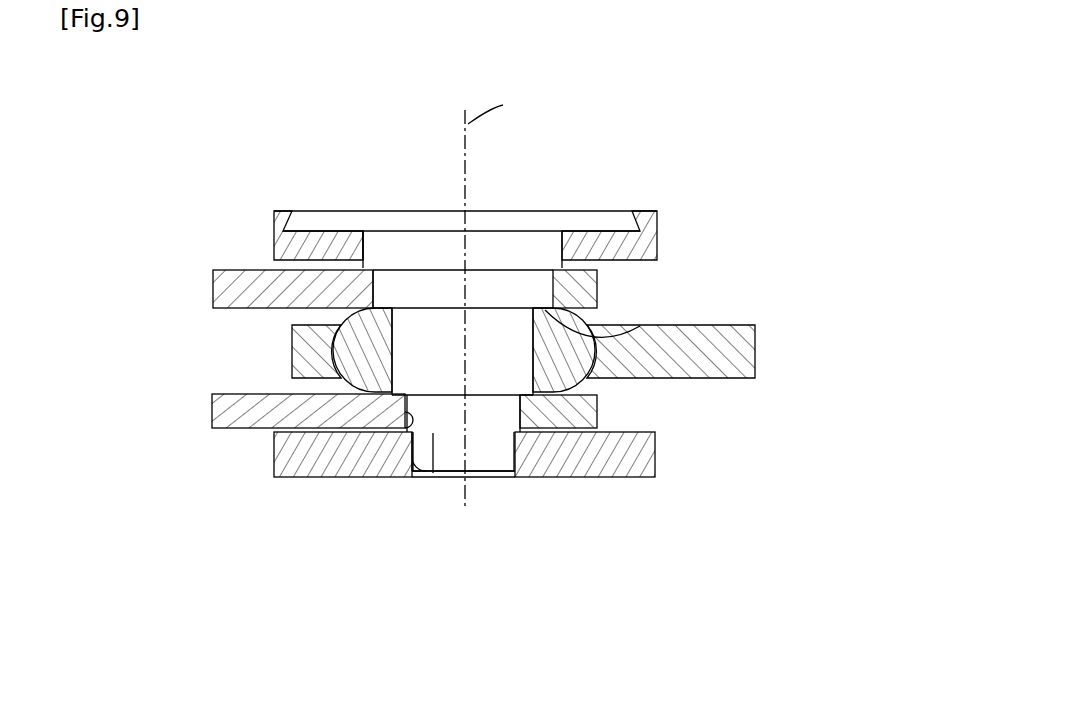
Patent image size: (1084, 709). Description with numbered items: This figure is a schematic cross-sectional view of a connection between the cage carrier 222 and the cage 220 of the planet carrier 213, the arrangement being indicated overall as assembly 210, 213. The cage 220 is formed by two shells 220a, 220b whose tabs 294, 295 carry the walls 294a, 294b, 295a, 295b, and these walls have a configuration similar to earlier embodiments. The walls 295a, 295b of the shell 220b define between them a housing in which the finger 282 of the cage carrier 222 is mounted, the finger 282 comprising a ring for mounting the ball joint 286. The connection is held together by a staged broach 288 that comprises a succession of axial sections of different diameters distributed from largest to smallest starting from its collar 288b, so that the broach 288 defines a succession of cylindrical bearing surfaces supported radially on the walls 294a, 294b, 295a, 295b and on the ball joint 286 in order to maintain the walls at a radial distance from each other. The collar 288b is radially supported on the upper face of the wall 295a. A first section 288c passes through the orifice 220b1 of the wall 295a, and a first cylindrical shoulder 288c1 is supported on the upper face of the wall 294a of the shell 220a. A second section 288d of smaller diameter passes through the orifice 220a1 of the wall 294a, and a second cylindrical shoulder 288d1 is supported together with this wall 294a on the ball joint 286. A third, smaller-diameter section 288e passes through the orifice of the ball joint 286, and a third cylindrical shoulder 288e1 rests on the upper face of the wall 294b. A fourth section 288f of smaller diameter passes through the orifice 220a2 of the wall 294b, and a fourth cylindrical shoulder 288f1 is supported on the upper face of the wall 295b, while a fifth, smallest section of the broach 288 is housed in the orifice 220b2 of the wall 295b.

The camera module 210 is at (502, 384).
The planet carrier 213 is at (803, 152).
The cage 220 is at (290, 484).
The shell 220a is at (212, 272).
The orifice 220a1 is at (374, 287).
The orifice 220a2 is at (407, 432).
The shell 220b is at (664, 213).
The orifice 220b1 is at (363, 258).
The orifice 220b2 is at (424, 474).
The cage carrier 222 is at (586, 348).
The finger 282 is at (755, 348).
The ball joint 286 is at (571, 368).
The broach 288 is at (607, 196).
The collar 288b is at (540, 223).
The first section 288c is at (488, 240).
The first cylindrical shoulder 288c1 is at (598, 293).
The second section 288d is at (508, 297).
The second cylindrical shoulder 288d1 is at (640, 326).
The third section 288e is at (487, 367).
The third cylindrical shoulder 288e1 is at (598, 413).
The fourth section 288f is at (475, 420).
The fourth cylindrical shoulder 288f1 is at (435, 475).
The tabs 294 is at (256, 361).
The wall 294a is at (214, 294).
The wall 294b is at (212, 412).
The tabs 295 is at (545, 370).
The wall 295a is at (660, 243).
The wall 295b is at (656, 466).